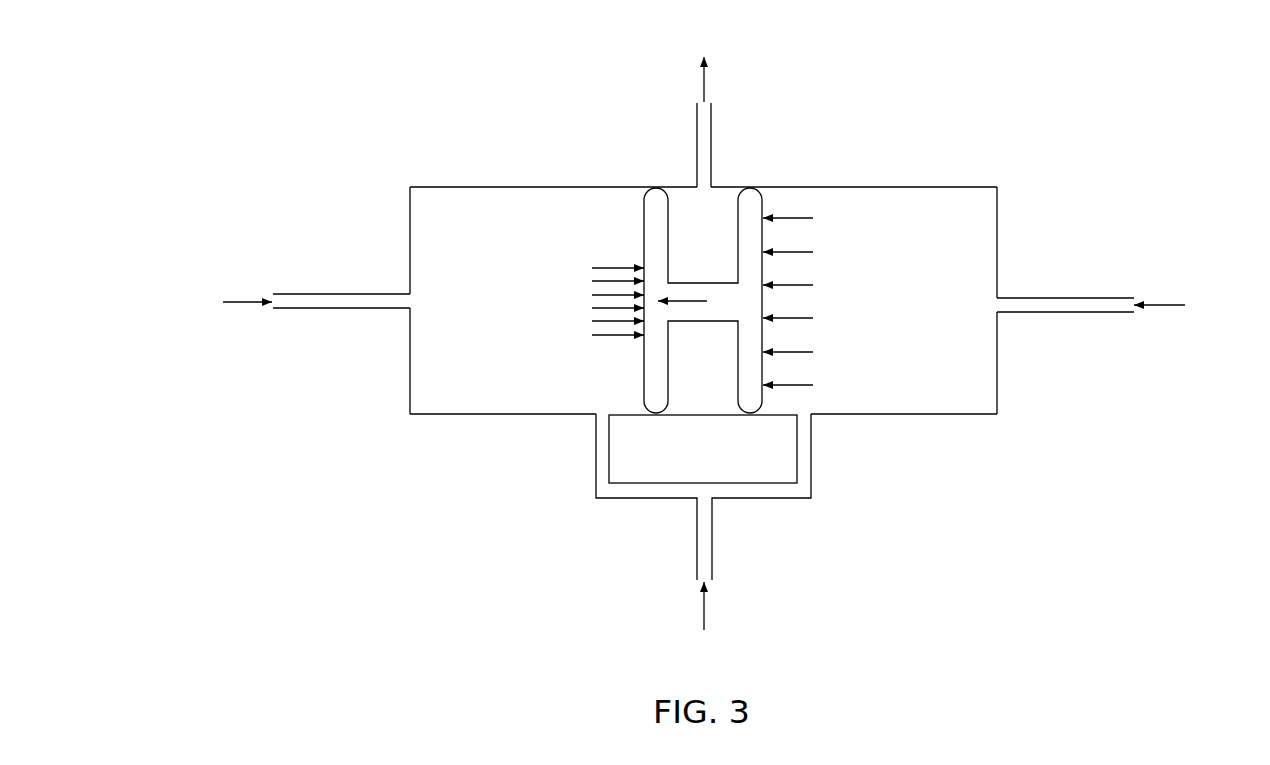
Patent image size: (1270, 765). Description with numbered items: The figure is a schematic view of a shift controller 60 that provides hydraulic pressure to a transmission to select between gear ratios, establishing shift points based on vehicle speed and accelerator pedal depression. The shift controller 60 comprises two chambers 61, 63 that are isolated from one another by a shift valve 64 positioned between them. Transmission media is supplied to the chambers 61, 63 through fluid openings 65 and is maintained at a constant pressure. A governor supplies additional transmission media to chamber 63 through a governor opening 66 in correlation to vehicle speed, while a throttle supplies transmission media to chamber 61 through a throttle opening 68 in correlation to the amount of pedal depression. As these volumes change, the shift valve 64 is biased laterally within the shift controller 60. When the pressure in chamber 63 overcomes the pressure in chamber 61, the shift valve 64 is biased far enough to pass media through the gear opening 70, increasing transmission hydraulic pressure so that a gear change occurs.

The shift controller 60 is at (403, 103).
The chamber 61 is at (539, 313).
The chamber 63 is at (915, 313).
The shift valve 64 is at (644, 223).
The fluid openings 65 is at (598, 416).
The governor opening 66 is at (997, 300).
The throttle opening 68 is at (410, 295).
The gear opening 70 is at (706, 186).